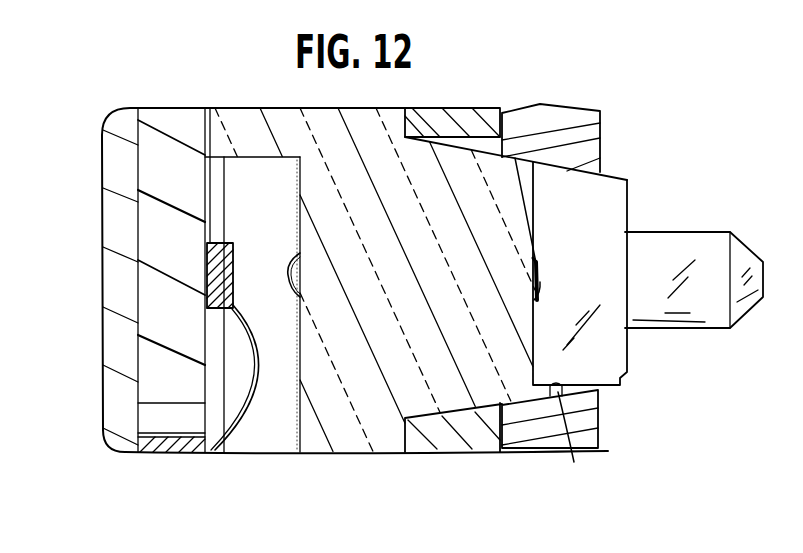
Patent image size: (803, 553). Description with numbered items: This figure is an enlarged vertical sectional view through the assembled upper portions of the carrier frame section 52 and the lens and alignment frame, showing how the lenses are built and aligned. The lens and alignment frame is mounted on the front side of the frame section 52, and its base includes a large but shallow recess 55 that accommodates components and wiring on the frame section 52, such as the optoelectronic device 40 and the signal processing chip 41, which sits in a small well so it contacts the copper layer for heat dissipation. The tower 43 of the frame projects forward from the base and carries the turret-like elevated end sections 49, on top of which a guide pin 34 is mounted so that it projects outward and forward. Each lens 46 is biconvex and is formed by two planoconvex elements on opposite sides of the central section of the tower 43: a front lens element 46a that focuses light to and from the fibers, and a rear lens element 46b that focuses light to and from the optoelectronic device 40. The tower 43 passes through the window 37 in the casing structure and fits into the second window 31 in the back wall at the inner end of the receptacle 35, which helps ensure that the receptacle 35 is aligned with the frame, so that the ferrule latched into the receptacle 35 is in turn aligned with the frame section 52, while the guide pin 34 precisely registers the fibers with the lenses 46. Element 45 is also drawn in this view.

The elevated end section 49 is at (128, 73).
The carrier frame section 52 is at (98, 289).
The signal processing chip 41 is at (177, 454).
The optoelectronic device 40 is at (237, 240).
The recess 55 is at (292, 423).
The rear lens element 46b is at (291, 266).
The front lens element 46a is at (542, 268).
The lens 46 is at (549, 277).
The tower 43 is at (632, 208).
The receptacle 35 is at (600, 136).
The guide pin 34 is at (713, 330).
The second window 31 is at (573, 444).
The window 37 is at (440, 452).
The lower block hatch 45 is at (465, 442).